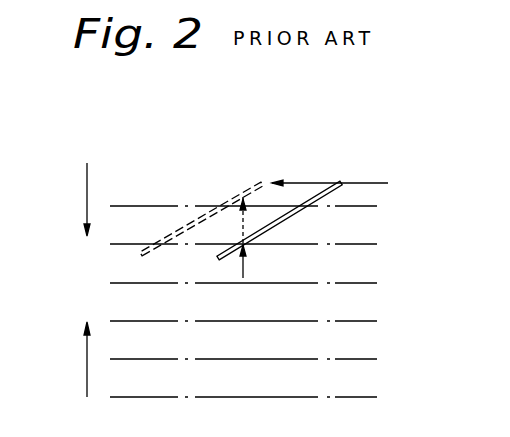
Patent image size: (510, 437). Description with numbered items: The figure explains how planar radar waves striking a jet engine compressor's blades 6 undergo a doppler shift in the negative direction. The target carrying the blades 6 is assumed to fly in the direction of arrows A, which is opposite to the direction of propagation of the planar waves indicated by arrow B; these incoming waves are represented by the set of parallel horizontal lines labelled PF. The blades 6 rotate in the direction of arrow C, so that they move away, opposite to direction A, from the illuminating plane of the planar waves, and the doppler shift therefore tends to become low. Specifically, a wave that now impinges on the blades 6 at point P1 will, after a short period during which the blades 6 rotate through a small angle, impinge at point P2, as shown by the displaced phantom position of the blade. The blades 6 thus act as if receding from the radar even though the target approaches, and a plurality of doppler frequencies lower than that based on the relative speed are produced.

The blades 6 is at (298, 205).
The direction of target flight A is at (87, 195).
The direction of planar wave propagation B is at (87, 361).
The direction of blade rotation C is at (375, 183).
The first impingement point P1 is at (254, 262).
The second impingement point P2 is at (254, 220).
The reference lines PF is at (360, 283).